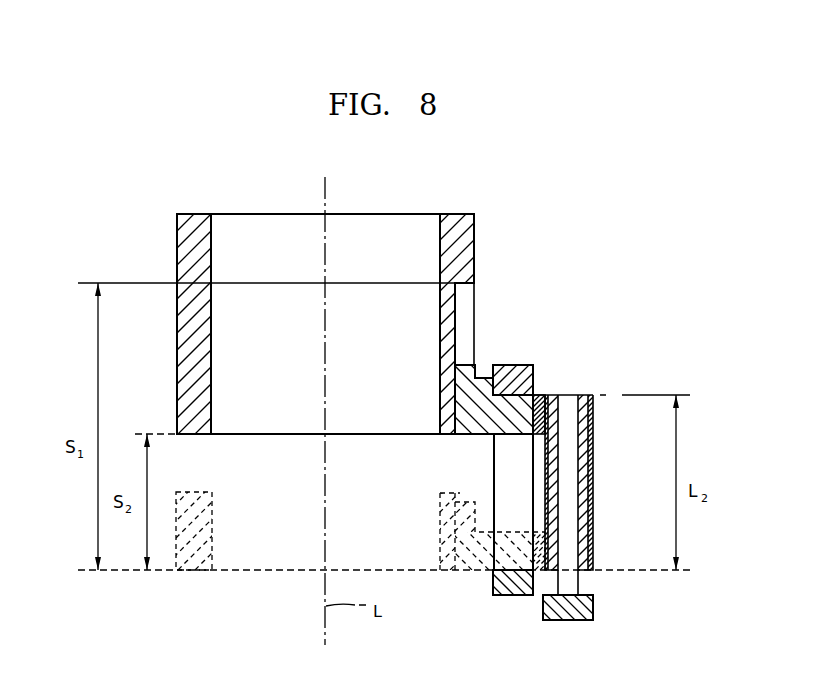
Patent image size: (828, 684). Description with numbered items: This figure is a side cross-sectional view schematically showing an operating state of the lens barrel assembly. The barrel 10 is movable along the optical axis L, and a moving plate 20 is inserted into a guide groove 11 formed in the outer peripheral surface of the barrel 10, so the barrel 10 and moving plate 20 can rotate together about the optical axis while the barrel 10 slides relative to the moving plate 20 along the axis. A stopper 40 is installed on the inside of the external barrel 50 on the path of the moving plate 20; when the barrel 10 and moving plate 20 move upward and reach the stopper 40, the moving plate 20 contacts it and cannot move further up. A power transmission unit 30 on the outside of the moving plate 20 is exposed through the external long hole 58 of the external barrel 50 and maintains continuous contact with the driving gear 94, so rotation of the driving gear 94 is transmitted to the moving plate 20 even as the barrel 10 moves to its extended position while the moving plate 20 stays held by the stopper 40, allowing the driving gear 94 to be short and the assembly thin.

The barrel 10 is at (458, 218).
The guide groove 11 is at (473, 284).
The moving plate 20 is at (466, 432).
The power transmission unit 30 is at (537, 397).
The stopper 40 is at (488, 382).
The external barrel 50 is at (517, 363).
The external long hole 58 is at (516, 570).
The driving gear 94 is at (596, 393).